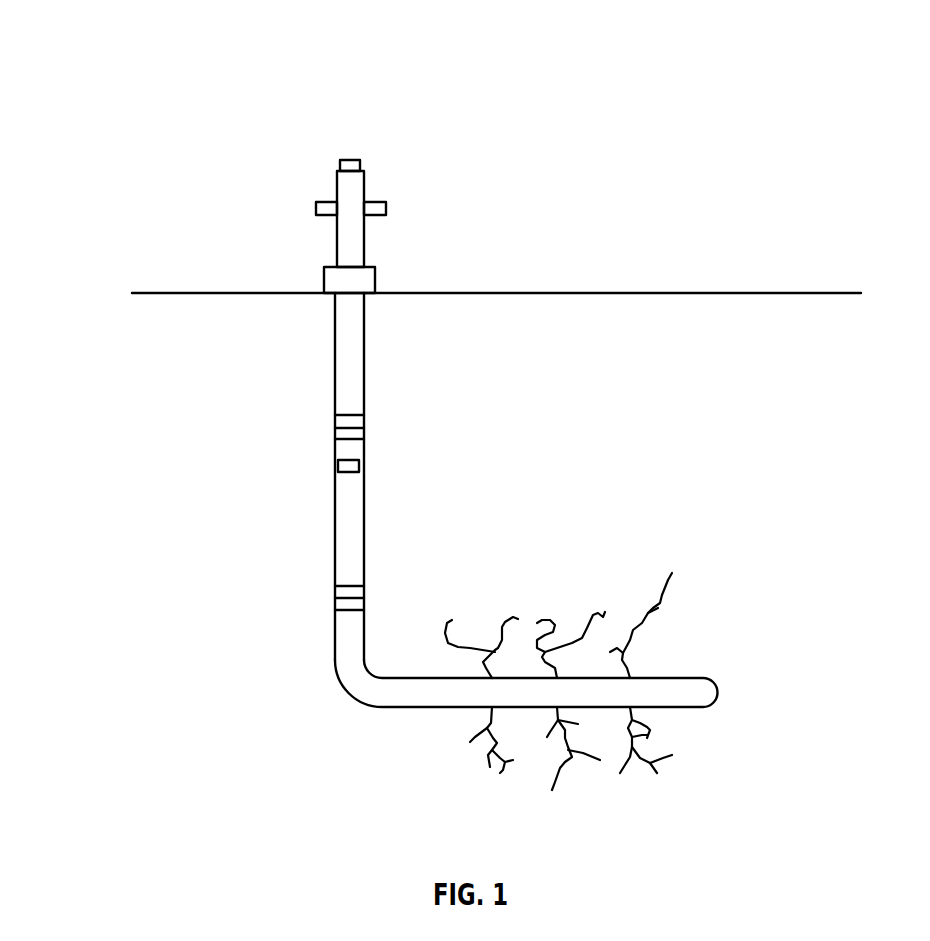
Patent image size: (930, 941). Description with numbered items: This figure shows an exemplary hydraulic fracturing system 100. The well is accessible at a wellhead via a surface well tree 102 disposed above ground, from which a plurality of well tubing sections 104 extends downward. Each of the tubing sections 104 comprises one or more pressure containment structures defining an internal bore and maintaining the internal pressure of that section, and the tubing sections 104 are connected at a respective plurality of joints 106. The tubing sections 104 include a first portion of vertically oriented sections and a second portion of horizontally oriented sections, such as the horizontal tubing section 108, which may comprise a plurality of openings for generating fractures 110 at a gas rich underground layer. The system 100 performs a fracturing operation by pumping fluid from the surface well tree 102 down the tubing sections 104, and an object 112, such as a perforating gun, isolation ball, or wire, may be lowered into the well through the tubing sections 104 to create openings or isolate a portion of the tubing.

The hydraulic fracturing system 100 is at (168, 97).
The surface well tree 102 is at (363, 163).
The well tubing sections 104 is at (365, 342).
The joints 106 is at (335, 428).
The horizontal tubing section 108 is at (413, 708).
The fractures 110 is at (568, 684).
The object 112 is at (338, 467).